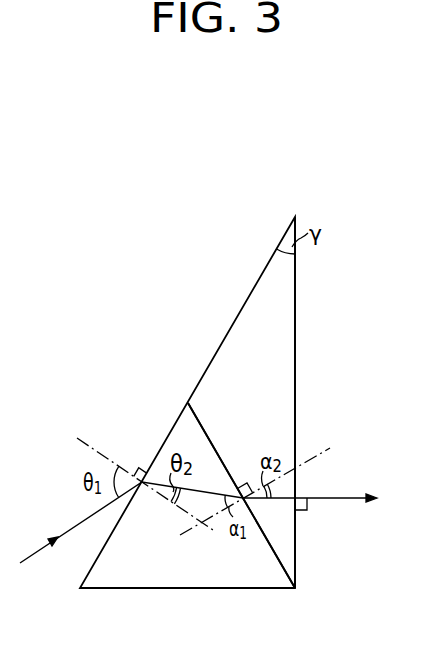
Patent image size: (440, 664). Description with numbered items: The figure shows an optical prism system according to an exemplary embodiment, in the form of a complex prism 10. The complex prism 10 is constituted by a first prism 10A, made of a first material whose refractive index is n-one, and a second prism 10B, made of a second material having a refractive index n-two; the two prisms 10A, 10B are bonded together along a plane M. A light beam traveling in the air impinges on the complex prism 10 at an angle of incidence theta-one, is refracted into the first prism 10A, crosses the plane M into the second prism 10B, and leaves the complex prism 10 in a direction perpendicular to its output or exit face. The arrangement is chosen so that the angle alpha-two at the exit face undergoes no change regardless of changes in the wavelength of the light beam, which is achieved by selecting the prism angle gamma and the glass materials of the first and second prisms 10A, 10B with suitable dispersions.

The complex prism 10 is at (212, 323).
The first prism 10A is at (188, 589).
The second prism 10B is at (297, 353).
The plane M is at (268, 542).